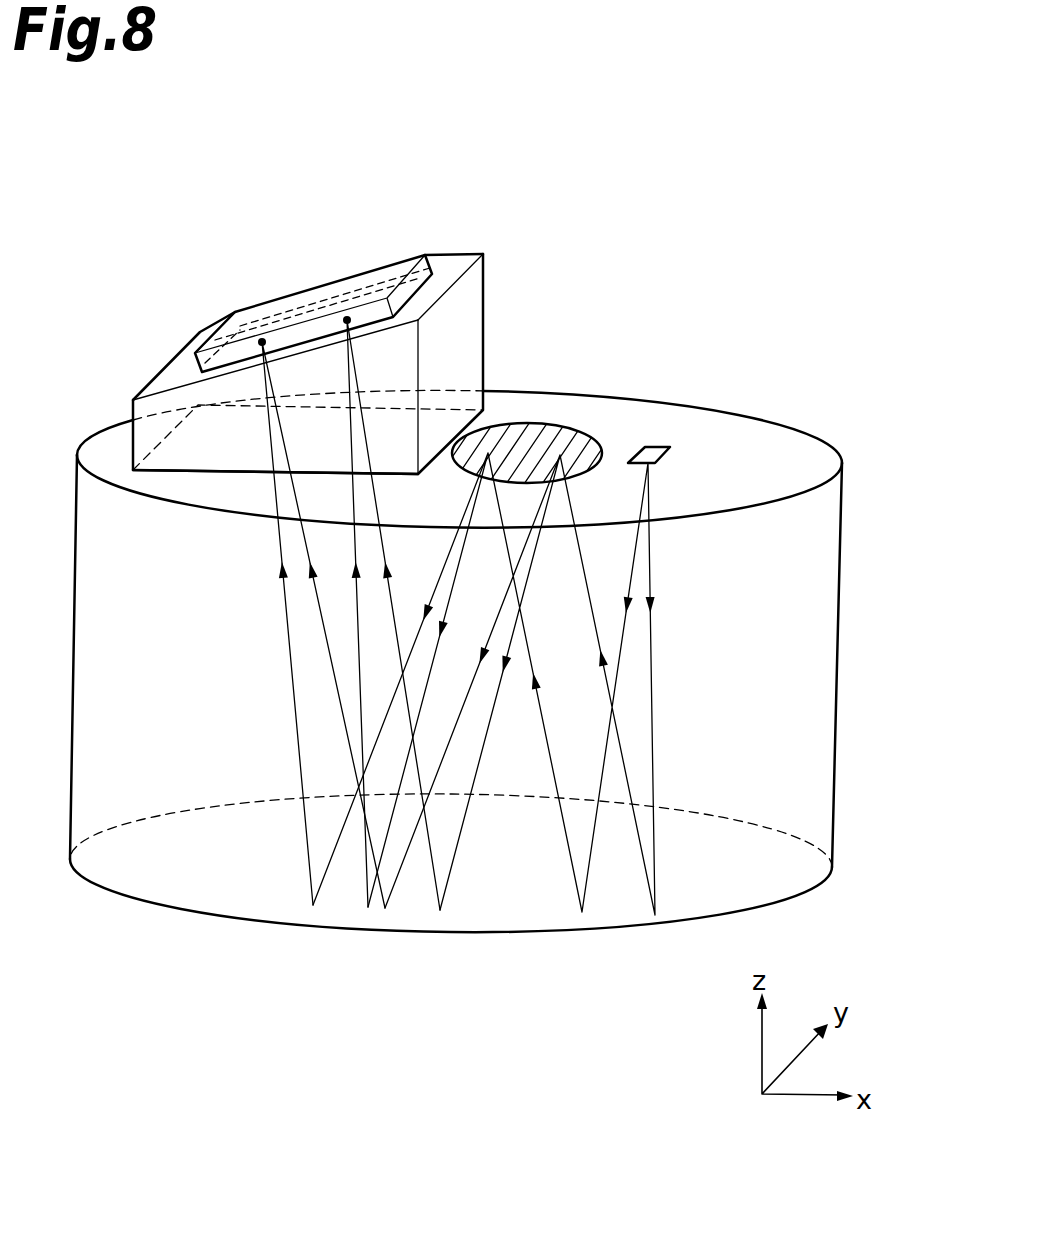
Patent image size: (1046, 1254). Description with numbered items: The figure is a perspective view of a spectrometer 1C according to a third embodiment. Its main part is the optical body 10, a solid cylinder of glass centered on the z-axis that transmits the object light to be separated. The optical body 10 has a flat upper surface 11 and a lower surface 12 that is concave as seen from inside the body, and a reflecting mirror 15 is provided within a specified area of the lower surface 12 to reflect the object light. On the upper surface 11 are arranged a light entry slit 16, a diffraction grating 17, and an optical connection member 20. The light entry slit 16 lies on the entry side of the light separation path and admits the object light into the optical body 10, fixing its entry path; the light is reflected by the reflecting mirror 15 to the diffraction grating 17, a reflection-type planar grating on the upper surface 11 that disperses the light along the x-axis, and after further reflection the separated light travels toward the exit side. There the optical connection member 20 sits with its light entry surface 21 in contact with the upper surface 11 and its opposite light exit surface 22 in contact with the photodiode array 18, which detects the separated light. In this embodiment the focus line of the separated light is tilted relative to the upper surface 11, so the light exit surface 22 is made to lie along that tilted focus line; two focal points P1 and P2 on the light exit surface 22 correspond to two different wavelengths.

The spectrometer 1C is at (662, 292).
The optical body 10 is at (830, 664).
The upper surface 11 is at (802, 448).
The lower surface 12 is at (451, 902).
The reflecting mirror 15 is at (257, 921).
The light entry slit 16 is at (652, 447).
The diffraction grating 17 is at (587, 425).
The photodiode array 18 is at (261, 305).
The optical connection member 20 is at (462, 312).
The light entry surface 21 is at (235, 476).
The light exit surface 22 is at (448, 270).
The focal point P1 is at (347, 316).
The focal point P2 is at (259, 340).